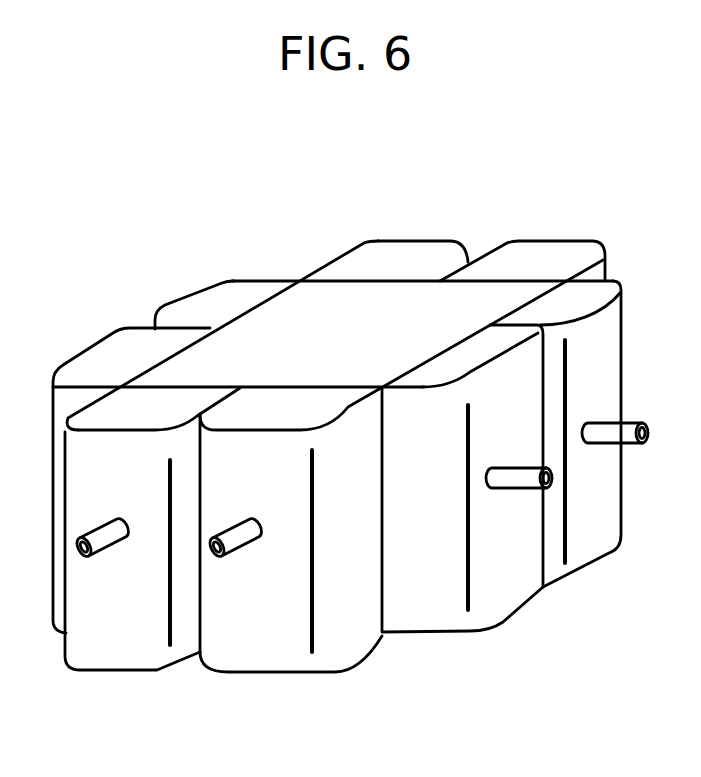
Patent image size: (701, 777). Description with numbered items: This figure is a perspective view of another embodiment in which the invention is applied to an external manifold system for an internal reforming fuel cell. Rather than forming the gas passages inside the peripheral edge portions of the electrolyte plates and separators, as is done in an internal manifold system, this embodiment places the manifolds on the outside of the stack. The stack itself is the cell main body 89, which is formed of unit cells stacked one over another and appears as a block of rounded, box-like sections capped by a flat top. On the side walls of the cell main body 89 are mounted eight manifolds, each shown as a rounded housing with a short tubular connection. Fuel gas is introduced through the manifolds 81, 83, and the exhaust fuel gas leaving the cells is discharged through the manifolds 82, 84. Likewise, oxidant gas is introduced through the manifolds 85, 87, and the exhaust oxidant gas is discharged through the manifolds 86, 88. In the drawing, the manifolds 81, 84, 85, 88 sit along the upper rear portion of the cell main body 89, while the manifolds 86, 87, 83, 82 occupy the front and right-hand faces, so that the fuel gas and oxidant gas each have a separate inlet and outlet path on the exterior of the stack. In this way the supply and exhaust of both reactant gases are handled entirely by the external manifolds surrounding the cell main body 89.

The manifold for introducing fuel gas 81 is at (90, 368).
The manifold for discharging exhaust fuel gas 82 is at (598, 542).
The manifold for introducing fuel gas 83 is at (520, 590).
The manifold for discharging exhaust fuel gas 84 is at (192, 308).
The manifold for introducing oxidant gas 85 is at (427, 253).
The manifold for discharging exhaust oxidant gas 86 is at (125, 658).
The manifold for introducing oxidant gas 87 is at (285, 657).
The manifold for discharging exhaust oxidant gas 88 is at (543, 253).
The cell main body 89 is at (300, 303).